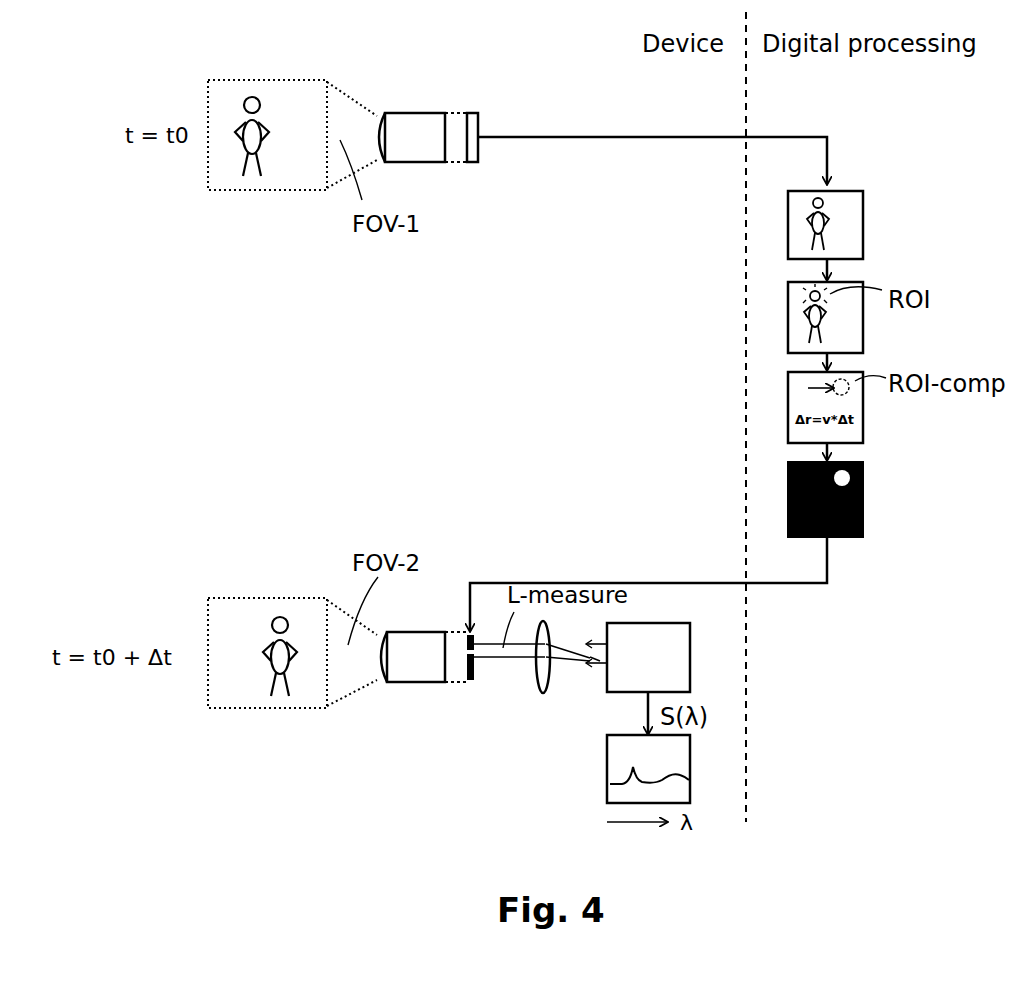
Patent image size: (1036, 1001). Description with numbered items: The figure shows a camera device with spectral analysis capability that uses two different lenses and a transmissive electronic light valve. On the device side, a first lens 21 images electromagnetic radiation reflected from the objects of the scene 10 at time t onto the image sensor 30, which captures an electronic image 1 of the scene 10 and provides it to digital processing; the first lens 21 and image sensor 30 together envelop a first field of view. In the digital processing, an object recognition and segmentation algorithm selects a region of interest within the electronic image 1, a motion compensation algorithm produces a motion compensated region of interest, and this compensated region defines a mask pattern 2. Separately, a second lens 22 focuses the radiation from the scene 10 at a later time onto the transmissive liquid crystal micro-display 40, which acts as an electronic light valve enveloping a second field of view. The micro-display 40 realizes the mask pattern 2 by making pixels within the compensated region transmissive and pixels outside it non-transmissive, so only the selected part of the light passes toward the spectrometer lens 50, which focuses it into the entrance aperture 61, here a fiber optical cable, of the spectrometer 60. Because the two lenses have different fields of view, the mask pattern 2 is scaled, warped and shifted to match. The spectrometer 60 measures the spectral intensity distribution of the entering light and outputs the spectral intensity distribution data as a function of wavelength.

The scene 10 is at (298, 102).
The first lens 21 is at (415, 128).
The image sensor 30 is at (475, 128).
The electronic image 1 is at (845, 236).
The mask pattern 2 is at (846, 499).
The second lens 22 is at (428, 660).
The transmissive liquid crystal micro-display 40 is at (476, 680).
The spectrometer lens 50 is at (533, 680).
The entrance aperture 61 is at (596, 662).
The spectrometer 60 is at (655, 633).